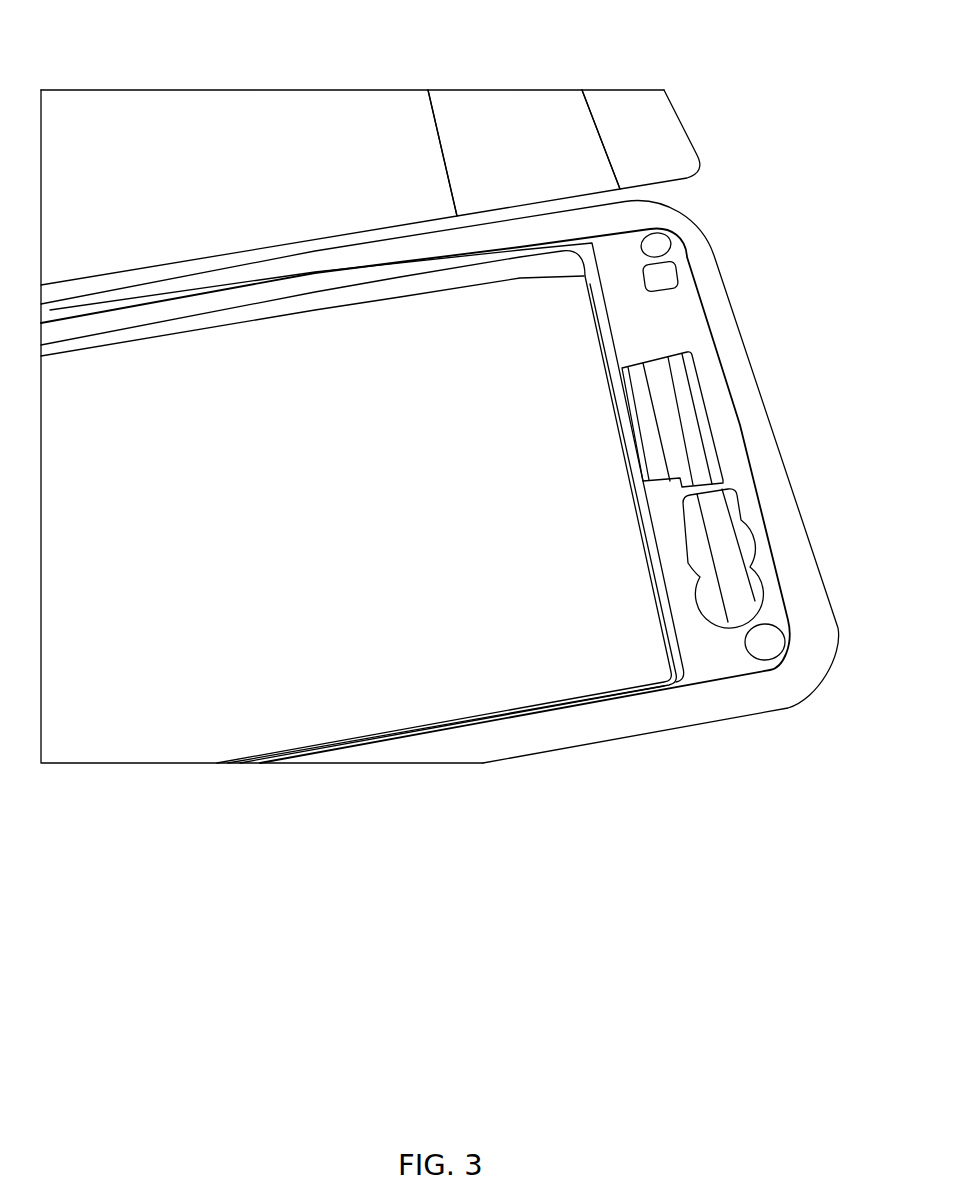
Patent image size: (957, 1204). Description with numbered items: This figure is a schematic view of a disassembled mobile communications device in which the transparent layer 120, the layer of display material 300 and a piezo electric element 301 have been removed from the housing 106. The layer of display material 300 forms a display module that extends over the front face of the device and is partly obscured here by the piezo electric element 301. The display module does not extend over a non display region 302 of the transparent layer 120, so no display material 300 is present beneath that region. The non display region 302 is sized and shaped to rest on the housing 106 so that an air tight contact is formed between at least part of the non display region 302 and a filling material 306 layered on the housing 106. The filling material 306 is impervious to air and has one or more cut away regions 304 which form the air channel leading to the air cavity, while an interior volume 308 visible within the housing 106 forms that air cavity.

The housing 106 is at (537, 728).
The transparent layer 120 is at (677, 138).
The layer of display material 300 is at (503, 117).
The piezo electric element 301 is at (184, 112).
The non display region 302 is at (665, 80).
The cut away regions 304 is at (673, 418).
The filling material 306 is at (692, 318).
The interior volume 308 is at (494, 545).